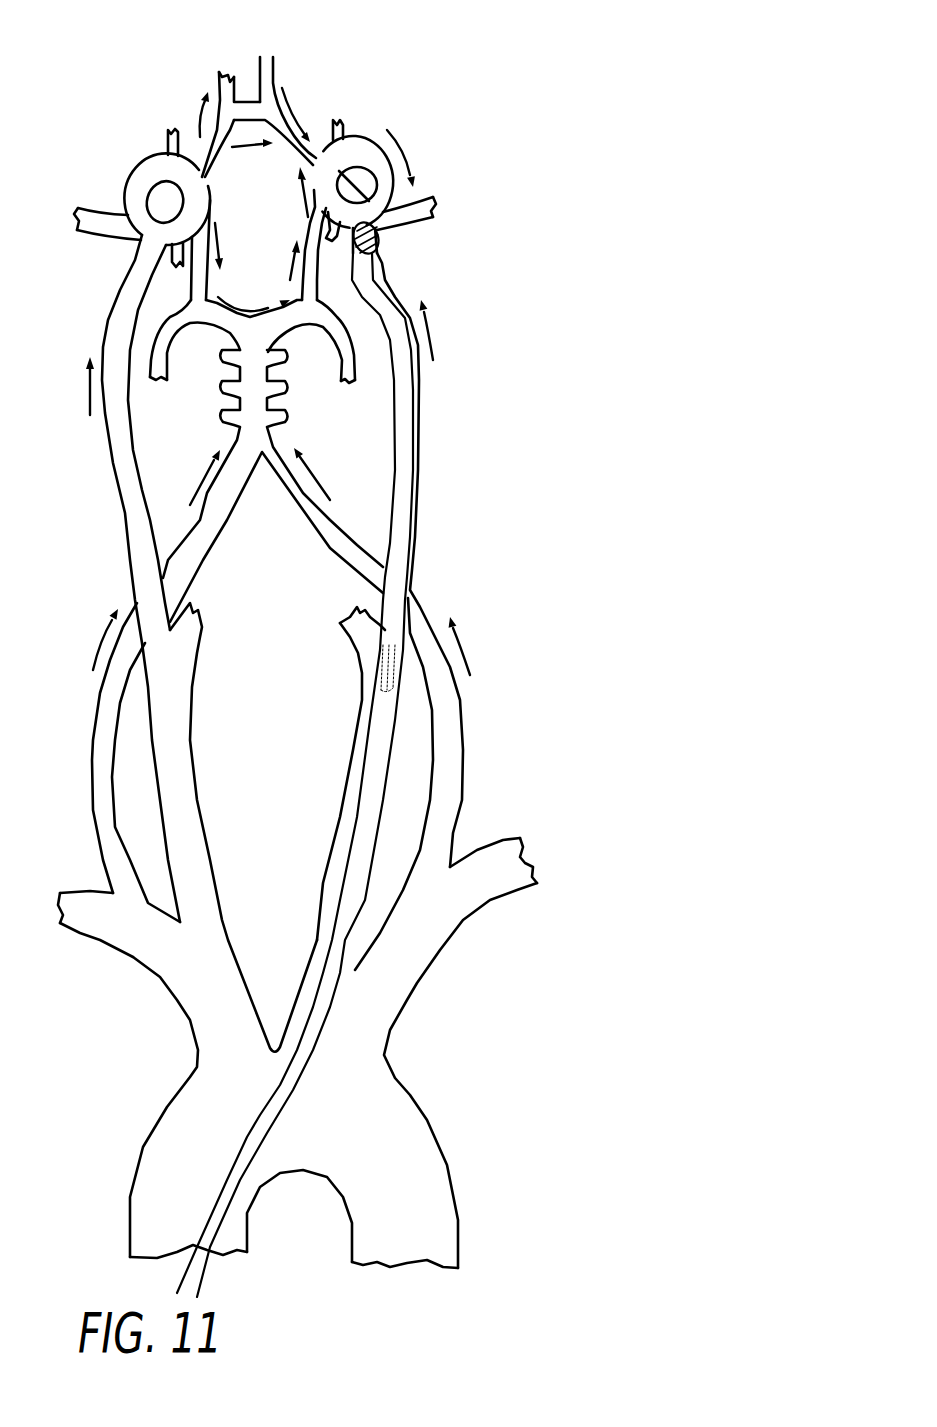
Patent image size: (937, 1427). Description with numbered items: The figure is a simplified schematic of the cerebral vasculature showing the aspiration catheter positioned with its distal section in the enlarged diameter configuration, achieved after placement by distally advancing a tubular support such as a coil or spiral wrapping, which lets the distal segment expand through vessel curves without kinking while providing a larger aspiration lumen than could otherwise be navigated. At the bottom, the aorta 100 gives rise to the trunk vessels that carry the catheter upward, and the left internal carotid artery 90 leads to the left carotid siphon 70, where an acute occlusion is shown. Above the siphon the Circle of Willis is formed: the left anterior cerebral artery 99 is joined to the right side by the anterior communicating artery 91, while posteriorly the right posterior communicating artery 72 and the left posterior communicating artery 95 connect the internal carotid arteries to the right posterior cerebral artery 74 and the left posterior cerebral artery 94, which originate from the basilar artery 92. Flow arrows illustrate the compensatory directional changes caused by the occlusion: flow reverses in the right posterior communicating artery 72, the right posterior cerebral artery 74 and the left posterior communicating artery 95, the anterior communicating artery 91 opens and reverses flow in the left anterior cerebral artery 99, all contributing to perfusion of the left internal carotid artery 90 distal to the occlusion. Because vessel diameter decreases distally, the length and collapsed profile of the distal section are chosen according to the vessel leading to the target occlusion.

The left carotid siphon 70 is at (402, 243).
The right posterior communicating artery 72 is at (200, 276).
The right posterior cerebral artery 74 is at (220, 317).
The left internal carotid artery 90 is at (410, 485).
The anterior communicating artery 91 is at (245, 108).
The basilar artery 92 is at (230, 373).
The left posterior cerebral artery 94 is at (347, 348).
The left posterior communicating artery 95 is at (307, 263).
The left anterior cerebral artery 99 is at (278, 128).
The aorta 100 is at (393, 1168).